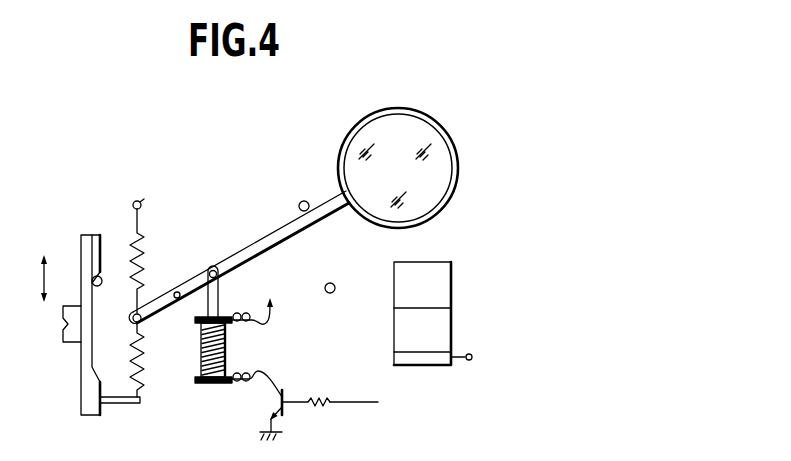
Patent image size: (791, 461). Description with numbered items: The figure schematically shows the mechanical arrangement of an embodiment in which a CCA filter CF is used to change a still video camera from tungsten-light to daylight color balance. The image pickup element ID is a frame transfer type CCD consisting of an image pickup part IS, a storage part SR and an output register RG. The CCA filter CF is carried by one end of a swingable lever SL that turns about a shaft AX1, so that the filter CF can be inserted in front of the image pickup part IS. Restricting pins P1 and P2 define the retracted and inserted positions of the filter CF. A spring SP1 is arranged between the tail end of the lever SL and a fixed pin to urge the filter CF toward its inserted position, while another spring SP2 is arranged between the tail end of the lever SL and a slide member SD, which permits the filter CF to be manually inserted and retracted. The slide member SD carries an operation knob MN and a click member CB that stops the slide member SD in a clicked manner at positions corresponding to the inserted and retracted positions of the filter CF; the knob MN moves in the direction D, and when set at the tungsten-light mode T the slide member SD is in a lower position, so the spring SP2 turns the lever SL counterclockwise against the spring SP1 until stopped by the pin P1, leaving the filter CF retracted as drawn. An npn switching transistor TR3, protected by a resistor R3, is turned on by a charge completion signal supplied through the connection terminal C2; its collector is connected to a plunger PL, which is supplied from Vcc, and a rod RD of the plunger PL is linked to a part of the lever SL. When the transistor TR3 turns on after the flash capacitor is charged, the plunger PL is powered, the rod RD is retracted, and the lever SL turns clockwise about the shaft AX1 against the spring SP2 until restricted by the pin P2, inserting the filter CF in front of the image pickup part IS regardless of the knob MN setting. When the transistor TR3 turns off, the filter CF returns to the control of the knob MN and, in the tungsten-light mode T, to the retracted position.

The slide member SD is at (82, 247).
The displacement direction D is at (44, 262).
The tungsten-light mode position T is at (44, 311).
The operation knob MN is at (63, 338).
The click member CB is at (101, 285).
The spring SP1 is at (142, 265).
The spring SP2 is at (144, 368).
The swingable lever SL is at (283, 241).
The shaft AX1 is at (177, 299).
The restricting pin P1 is at (301, 202).
The CCA filter CF is at (443, 146).
The rod RD is at (218, 298).
The plunger PL is at (226, 362).
The supply voltage Vcc is at (259, 297).
The npn switching transistor TR3 is at (284, 394).
The resistor R3 is at (312, 407).
The connection terminal C2 is at (370, 408).
The restricting pin P2 is at (333, 293).
The image pickup element ID is at (461, 265).
The image pickup part IS is at (445, 292).
The storage part SR is at (445, 330).
The output register RG is at (440, 358).